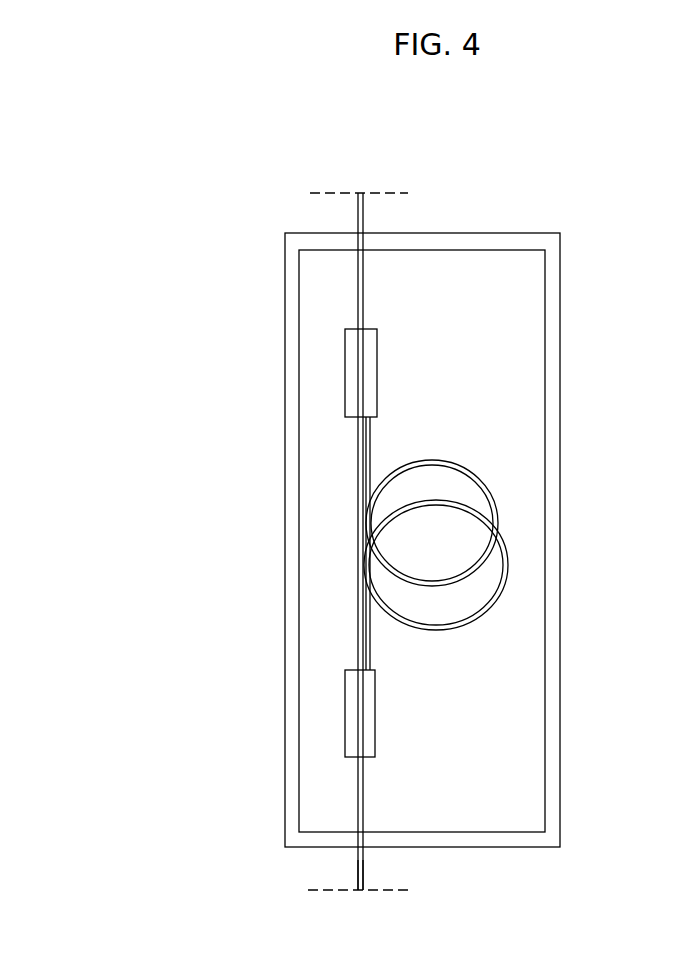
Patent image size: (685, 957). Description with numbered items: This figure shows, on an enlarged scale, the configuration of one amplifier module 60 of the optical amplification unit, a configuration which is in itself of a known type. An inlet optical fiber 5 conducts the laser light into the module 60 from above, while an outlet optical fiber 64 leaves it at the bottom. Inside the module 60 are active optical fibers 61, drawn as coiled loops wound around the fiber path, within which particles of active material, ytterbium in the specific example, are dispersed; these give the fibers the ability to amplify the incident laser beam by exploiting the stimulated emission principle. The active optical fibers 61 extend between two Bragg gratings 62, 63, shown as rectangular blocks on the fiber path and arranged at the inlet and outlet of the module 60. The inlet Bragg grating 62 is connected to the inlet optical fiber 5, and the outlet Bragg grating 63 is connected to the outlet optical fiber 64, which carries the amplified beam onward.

The optical fiber 5 is at (357, 207).
The amplifier module 60 is at (600, 353).
The active optical fibers 61 is at (412, 500).
The Bragg grating 62 is at (360, 350).
The Bragg grating 63 is at (362, 692).
The outlet optical fiber 64 is at (355, 862).